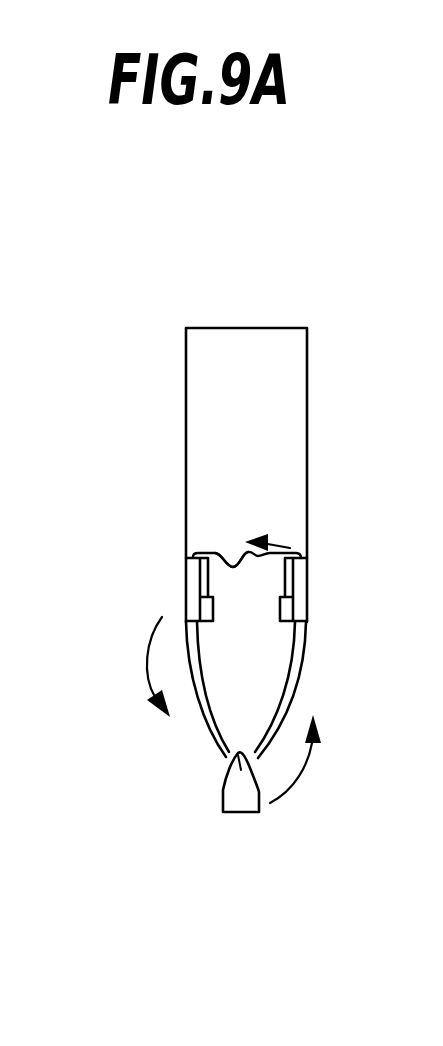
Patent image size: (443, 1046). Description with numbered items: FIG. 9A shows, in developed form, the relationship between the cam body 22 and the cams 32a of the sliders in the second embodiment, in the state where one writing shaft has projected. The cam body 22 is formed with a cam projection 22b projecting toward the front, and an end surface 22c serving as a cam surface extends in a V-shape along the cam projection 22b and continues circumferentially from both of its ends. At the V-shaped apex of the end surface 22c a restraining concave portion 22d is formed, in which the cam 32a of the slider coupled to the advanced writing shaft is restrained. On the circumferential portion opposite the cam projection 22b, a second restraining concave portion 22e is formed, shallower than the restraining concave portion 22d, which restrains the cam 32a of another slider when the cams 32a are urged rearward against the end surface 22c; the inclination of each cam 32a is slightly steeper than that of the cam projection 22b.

The cam body 22 is at (295, 432).
The cam projection 22b is at (214, 697).
The end surface 22c is at (297, 658).
The restraining concave portion 22d is at (230, 772).
The second restraining concave portion 22e is at (226, 560).
The cam 32a is at (192, 590).